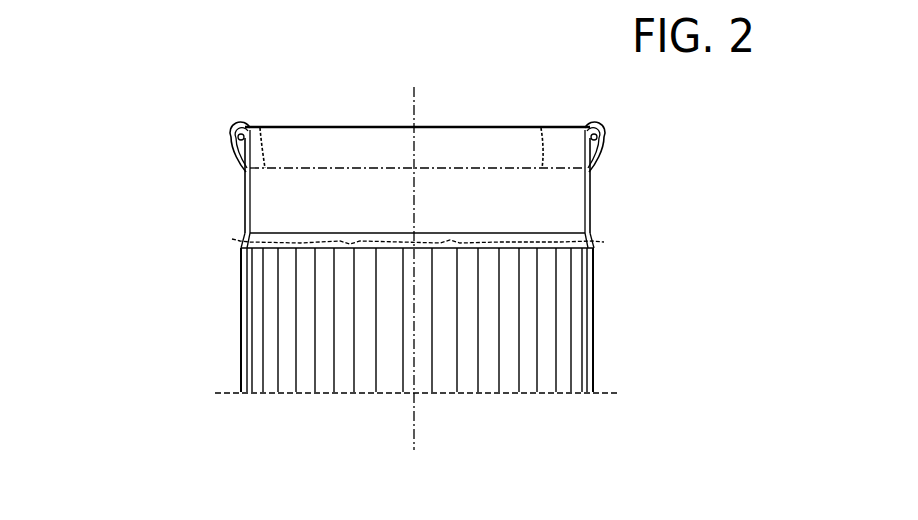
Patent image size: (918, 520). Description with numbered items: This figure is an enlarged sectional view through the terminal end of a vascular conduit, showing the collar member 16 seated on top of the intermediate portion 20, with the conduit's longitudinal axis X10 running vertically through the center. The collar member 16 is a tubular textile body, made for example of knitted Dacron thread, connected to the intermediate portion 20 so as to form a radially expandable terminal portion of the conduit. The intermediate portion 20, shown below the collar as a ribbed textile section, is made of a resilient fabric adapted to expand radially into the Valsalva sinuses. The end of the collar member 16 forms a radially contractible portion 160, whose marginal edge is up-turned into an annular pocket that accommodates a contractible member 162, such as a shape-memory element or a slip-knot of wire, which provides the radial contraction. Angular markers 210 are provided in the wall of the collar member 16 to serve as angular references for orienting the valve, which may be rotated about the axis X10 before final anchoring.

The radially contractible portion 160 is at (399, 146).
The contractible member 162 is at (598, 167).
The collar member 16 is at (247, 200).
The angular markers 210 is at (281, 125).
The intermediate portion 20 is at (530, 315).
The longitudinal axis X10 is at (414, 425).